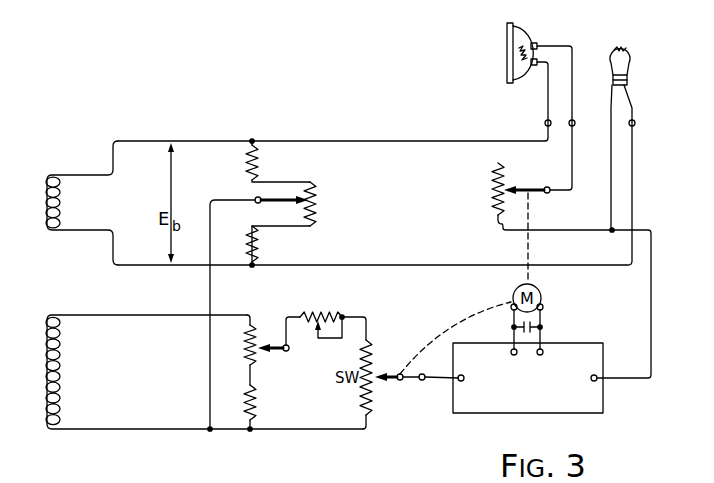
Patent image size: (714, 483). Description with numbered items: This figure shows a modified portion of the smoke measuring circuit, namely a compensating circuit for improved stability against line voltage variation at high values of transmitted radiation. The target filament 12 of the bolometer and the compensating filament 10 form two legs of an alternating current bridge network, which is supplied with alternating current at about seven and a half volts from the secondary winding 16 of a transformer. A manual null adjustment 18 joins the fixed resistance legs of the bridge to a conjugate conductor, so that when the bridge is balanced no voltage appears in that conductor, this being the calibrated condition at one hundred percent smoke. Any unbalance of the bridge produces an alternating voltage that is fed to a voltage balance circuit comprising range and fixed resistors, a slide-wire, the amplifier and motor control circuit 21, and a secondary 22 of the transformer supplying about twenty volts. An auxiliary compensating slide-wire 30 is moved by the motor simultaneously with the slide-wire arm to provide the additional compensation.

The compensating filament 10 is at (629, 52).
The target filament 12 is at (519, 44).
The secondary winding 16 is at (60, 204).
The manual null adjustment 18 is at (284, 203).
The amplifier and motor control circuit 21 is at (514, 378).
The secondary 22 is at (58, 373).
The auxiliary compensating slide-wire 30 is at (492, 189).